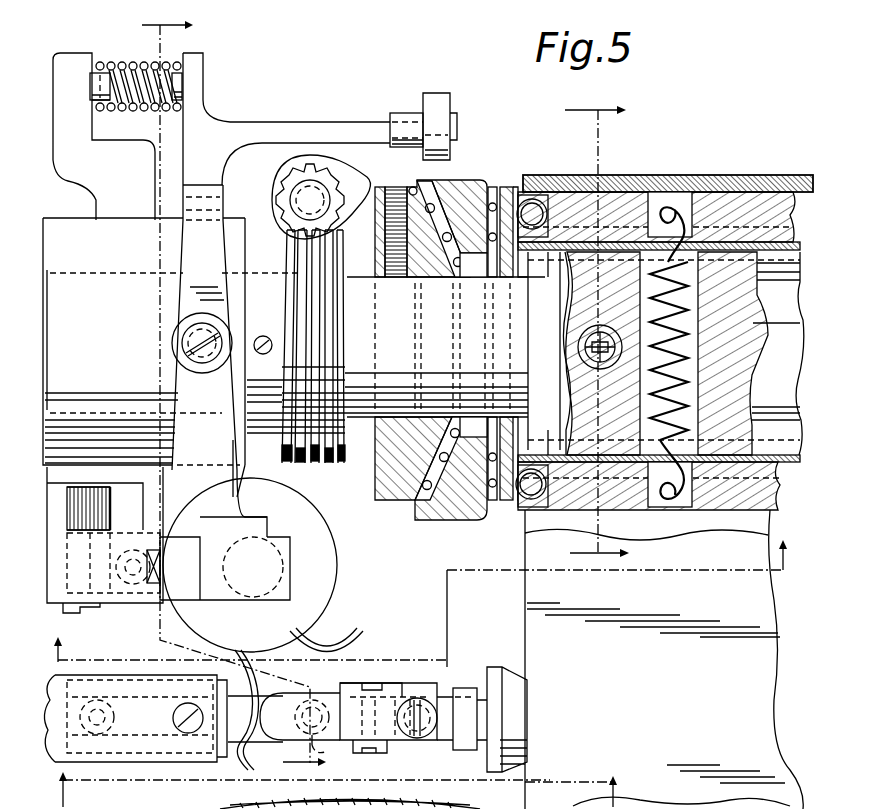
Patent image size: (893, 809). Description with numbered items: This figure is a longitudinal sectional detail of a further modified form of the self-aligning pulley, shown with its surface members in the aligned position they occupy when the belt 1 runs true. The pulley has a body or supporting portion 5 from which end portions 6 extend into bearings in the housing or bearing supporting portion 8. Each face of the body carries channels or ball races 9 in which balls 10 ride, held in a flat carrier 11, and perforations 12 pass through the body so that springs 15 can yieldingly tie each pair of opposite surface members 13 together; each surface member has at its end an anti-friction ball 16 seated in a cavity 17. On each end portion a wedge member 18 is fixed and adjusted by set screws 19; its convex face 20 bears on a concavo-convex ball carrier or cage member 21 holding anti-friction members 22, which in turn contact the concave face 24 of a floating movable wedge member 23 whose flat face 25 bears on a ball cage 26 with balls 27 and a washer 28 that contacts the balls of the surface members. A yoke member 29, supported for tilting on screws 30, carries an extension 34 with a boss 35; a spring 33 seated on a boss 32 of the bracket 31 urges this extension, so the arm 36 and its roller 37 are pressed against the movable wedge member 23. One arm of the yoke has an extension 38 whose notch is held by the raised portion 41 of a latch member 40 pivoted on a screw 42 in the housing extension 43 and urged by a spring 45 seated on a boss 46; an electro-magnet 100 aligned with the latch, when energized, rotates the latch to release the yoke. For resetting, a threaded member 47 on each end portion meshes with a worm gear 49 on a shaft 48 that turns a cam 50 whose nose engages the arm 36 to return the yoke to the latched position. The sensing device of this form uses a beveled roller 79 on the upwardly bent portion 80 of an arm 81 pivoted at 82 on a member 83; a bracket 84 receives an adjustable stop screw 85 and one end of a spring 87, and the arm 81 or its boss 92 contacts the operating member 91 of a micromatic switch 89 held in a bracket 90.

The belt 1 is at (684, 177).
The body or supporting portion 5 is at (757, 324).
The end portions 6 is at (358, 428).
The housing or bearing supporting portion 8 is at (62, 232).
The channels or ball races 9 is at (804, 437).
The balls or anti-friction members 10 is at (614, 168).
The carrier 11 is at (795, 240).
The perforations 12 is at (578, 340).
The surface member 13 is at (752, 176).
The springs 15 is at (585, 354).
The ball 16 is at (532, 185).
The cavity 17 is at (556, 180).
The wedge member 18 is at (382, 476).
The set screws 19 is at (397, 197).
The convex face 20 is at (412, 186).
The ball carrier or cage member 21 is at (455, 255).
The balls or anti-friction members 22 is at (446, 230).
The movable wedge member 23 is at (470, 180).
The concave face 24 is at (410, 500).
The flat face 25 is at (491, 200).
The ball cage or carrier 26 is at (503, 200).
The balls or anti-friction members 27 is at (473, 265).
The washer 28 is at (532, 200).
The yoke member 29 is at (193, 256).
The screws 30 is at (185, 335).
The bracket 31 is at (78, 129).
The boss 32 is at (93, 75).
The spring 33 is at (120, 72).
The extension 34 is at (198, 95).
The boss 35 is at (183, 81).
The arm 36 is at (271, 125).
The roller 37 is at (435, 95).
The extension 38 is at (225, 480).
The latch member 40 is at (283, 545).
The raised portion 41 is at (150, 583).
The screw 42 is at (88, 614).
The extension 43 is at (110, 497).
The spring 45 is at (103, 508).
The boss 46 is at (148, 585).
The threaded member 47 is at (290, 247).
The shaft or pin 48 is at (305, 193).
The worm gear 49 is at (292, 170).
The cam 50 is at (352, 180).
The roller 79 is at (510, 677).
The upwardly bent portion 80 is at (462, 688).
The arm 81 is at (258, 705).
The pivot 82 is at (365, 755).
The member 83 is at (390, 683).
The bracket 84 is at (335, 700).
The adjustable stop screw 85 is at (420, 698).
The spring 87 is at (326, 748).
The micromatic switch 89 is at (55, 758).
The bracket 90 is at (118, 746).
The operating member 91 is at (108, 712).
The boss 92 is at (108, 722).
The electro-magnet 100 is at (323, 585).